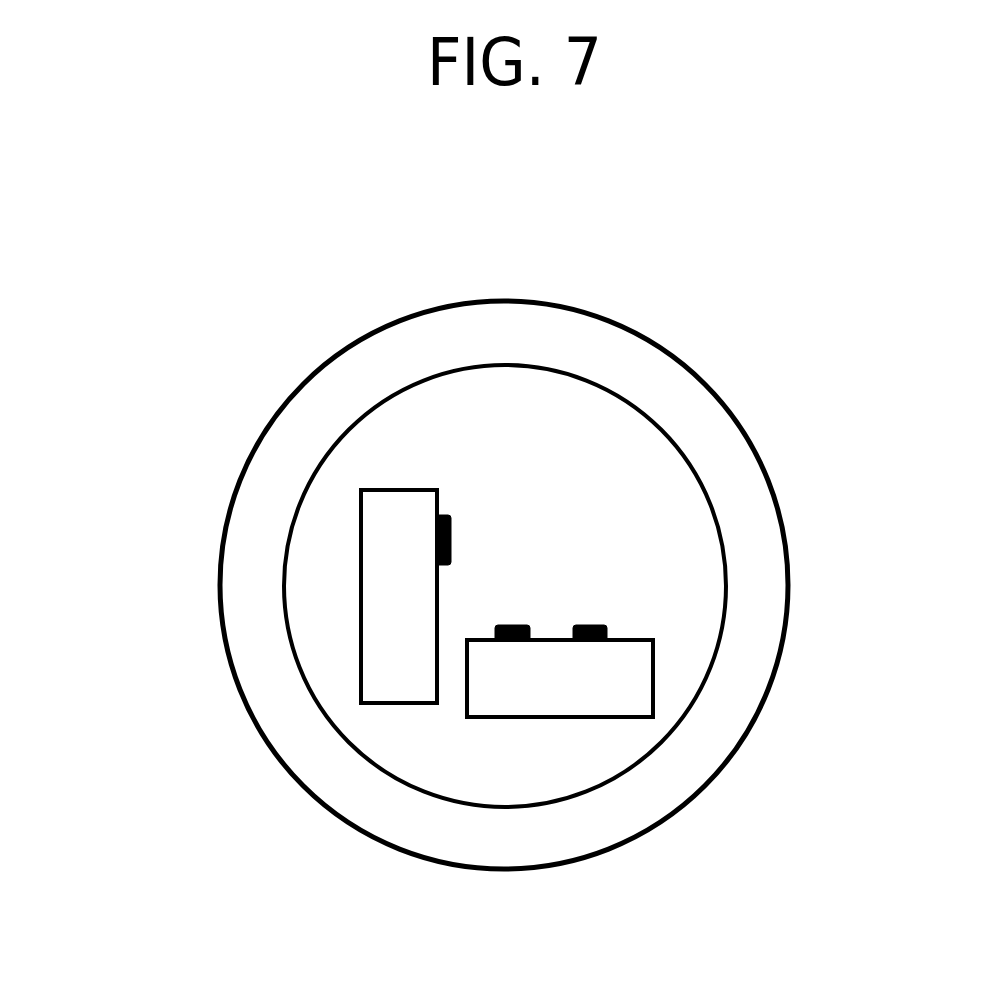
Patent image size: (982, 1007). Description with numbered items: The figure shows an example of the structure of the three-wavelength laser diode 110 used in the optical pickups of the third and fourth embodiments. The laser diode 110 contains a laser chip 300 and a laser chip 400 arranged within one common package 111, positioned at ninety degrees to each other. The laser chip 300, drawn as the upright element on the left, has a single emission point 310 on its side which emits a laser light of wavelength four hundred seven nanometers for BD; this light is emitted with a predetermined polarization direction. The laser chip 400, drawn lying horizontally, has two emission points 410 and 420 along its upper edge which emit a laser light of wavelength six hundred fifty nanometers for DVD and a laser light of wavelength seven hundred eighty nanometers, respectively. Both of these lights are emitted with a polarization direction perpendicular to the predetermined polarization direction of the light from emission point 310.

The three-wavelength laser diode 110 is at (226, 530).
The package 111 is at (708, 743).
The laser chip 300 is at (377, 645).
The emission point 310 is at (435, 535).
The laser chip 400 is at (530, 690).
The emission point 410 is at (512, 625).
The emission point 420 is at (602, 620).